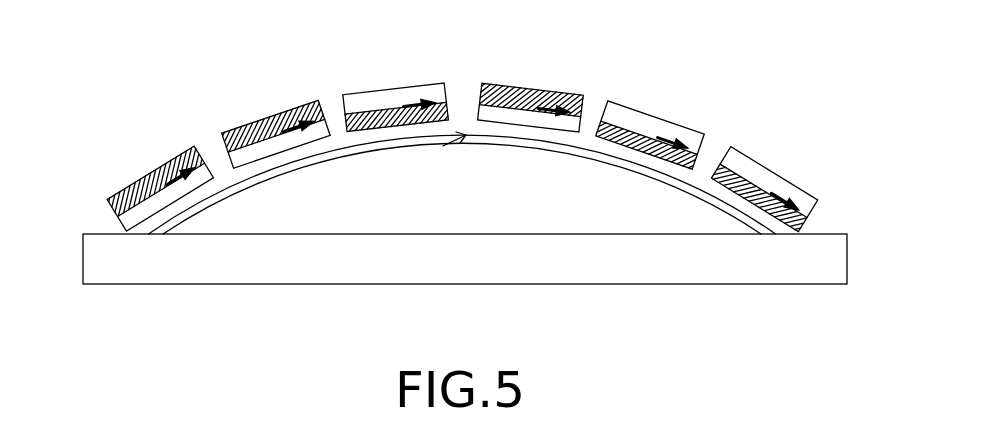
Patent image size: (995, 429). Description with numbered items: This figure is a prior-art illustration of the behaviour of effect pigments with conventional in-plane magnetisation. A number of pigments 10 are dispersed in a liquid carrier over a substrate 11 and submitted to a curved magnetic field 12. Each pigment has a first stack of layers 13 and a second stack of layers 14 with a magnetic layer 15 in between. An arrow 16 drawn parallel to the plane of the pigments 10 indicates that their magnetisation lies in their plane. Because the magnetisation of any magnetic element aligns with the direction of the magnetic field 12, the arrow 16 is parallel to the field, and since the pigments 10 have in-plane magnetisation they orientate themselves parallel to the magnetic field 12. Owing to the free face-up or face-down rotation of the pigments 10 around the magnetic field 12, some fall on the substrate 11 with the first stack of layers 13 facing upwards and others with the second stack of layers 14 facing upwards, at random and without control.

The pigments 10 is at (432, 126).
The substrate 11 is at (275, 270).
The curved magnetic field 12 is at (716, 200).
The first stack of layers 13 is at (531, 88).
The second stack of layers 14 is at (503, 120).
The magnetic layer 15 is at (636, 128).
The arrow 16 is at (293, 130).